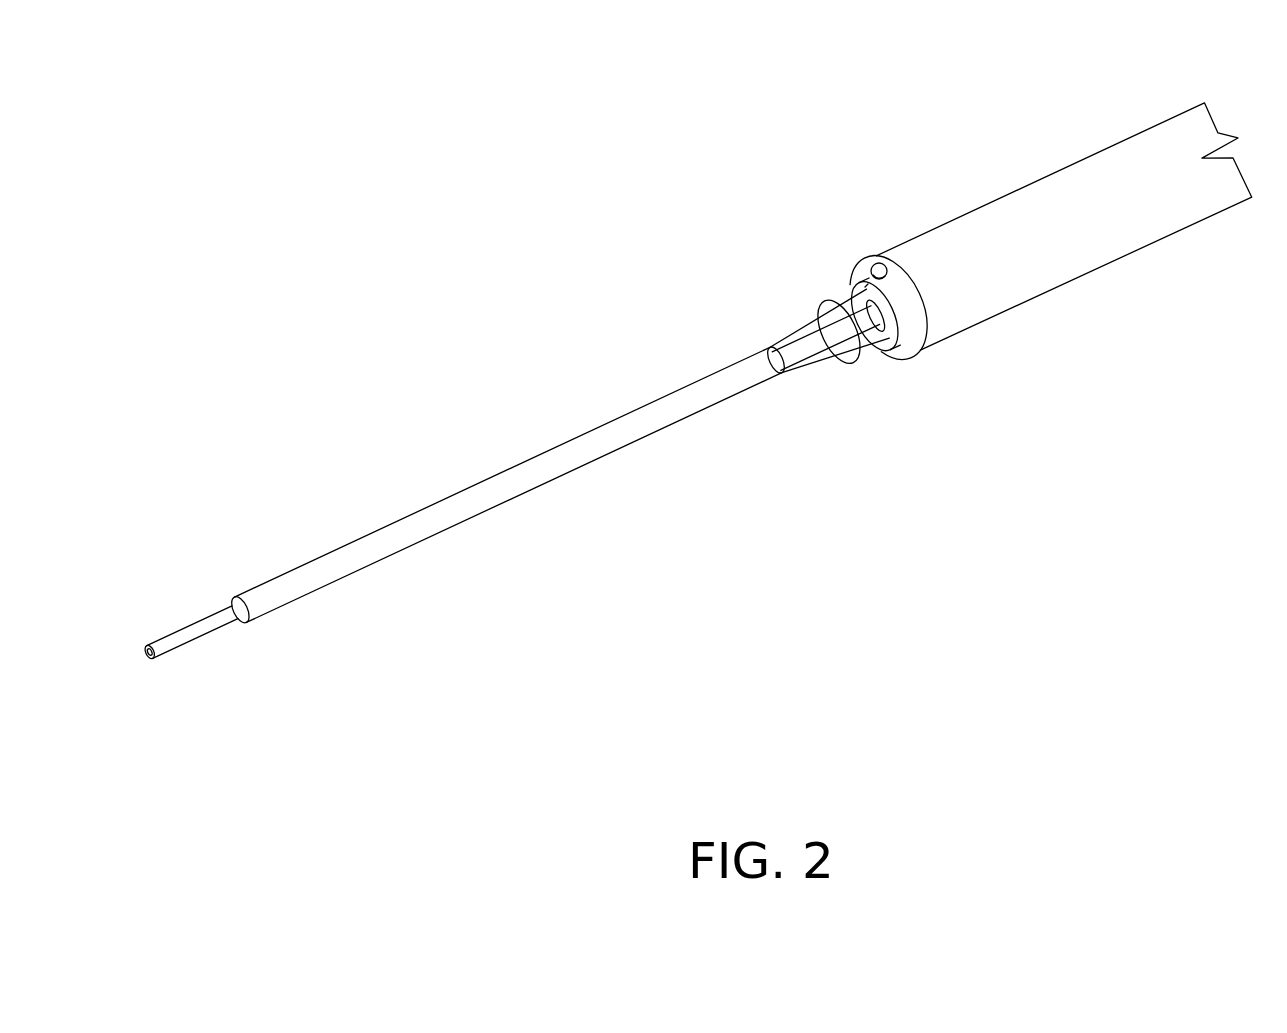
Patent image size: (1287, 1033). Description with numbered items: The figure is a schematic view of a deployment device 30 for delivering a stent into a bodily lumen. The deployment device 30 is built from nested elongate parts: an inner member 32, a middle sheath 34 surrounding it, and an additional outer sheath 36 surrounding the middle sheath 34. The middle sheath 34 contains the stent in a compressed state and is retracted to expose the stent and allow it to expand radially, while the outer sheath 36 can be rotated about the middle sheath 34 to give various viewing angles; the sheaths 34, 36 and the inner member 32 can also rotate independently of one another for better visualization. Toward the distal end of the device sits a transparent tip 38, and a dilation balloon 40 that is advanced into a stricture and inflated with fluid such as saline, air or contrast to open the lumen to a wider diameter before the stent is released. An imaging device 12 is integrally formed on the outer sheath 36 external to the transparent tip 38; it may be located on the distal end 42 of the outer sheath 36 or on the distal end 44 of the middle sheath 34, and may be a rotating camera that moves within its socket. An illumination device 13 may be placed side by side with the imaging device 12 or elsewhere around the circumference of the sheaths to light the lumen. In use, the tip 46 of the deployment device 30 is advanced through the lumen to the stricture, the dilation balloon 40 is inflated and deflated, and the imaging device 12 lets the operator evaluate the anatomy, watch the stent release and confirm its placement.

The deployment device 30 is at (703, 376).
The imaging device 12 is at (872, 264).
The illumination device 13 is at (865, 287).
The inner member 32 is at (793, 350).
The middle sheath 34 is at (903, 322).
The outer sheath 36 is at (1110, 262).
The transparent tip 38 is at (825, 303).
The dilation balloon 40 is at (492, 510).
The distal end 42 is at (895, 358).
The distal end 44 is at (845, 347).
The tip 46 is at (193, 645).